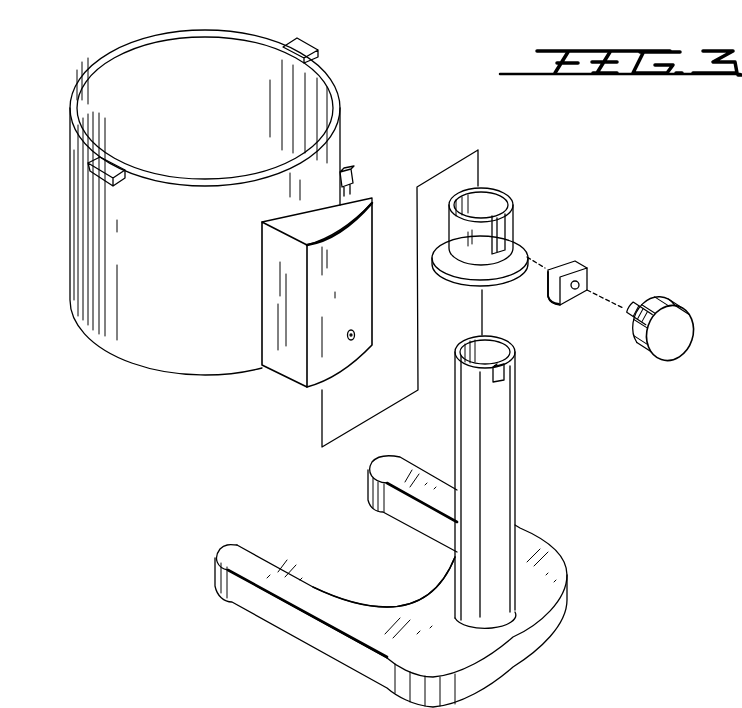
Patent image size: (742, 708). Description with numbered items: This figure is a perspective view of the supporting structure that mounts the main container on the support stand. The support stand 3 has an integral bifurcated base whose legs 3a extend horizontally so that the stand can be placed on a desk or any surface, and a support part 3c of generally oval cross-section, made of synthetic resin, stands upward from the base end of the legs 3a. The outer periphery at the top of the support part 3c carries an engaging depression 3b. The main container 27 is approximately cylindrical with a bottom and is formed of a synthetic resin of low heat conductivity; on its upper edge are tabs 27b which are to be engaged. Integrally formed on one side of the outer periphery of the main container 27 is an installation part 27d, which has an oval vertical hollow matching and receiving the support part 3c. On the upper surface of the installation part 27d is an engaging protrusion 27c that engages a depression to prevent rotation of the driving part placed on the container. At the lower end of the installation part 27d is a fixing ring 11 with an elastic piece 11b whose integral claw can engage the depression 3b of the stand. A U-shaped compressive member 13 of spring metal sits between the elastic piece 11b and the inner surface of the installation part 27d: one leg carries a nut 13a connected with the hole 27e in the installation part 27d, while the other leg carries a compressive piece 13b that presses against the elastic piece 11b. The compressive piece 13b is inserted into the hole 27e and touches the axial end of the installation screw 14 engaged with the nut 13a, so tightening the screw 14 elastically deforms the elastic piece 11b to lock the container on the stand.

The support stand 3 is at (555, 548).
The legs of support base 3a is at (433, 530).
The engaging depression 3b is at (517, 378).
The support part 3c is at (516, 434).
The fixing ring 11 is at (513, 248).
The elastic piece 11b is at (507, 219).
The compressive member 13 is at (614, 271).
The nut 13a is at (573, 292).
The compressive piece 13b is at (554, 284).
The installation screw 14 is at (669, 304).
The main container 27 is at (172, 371).
The tabs 27b is at (303, 52).
The engaging protrusion 27c is at (352, 176).
The installation part 27d is at (268, 278).
The hole 27e is at (350, 329).